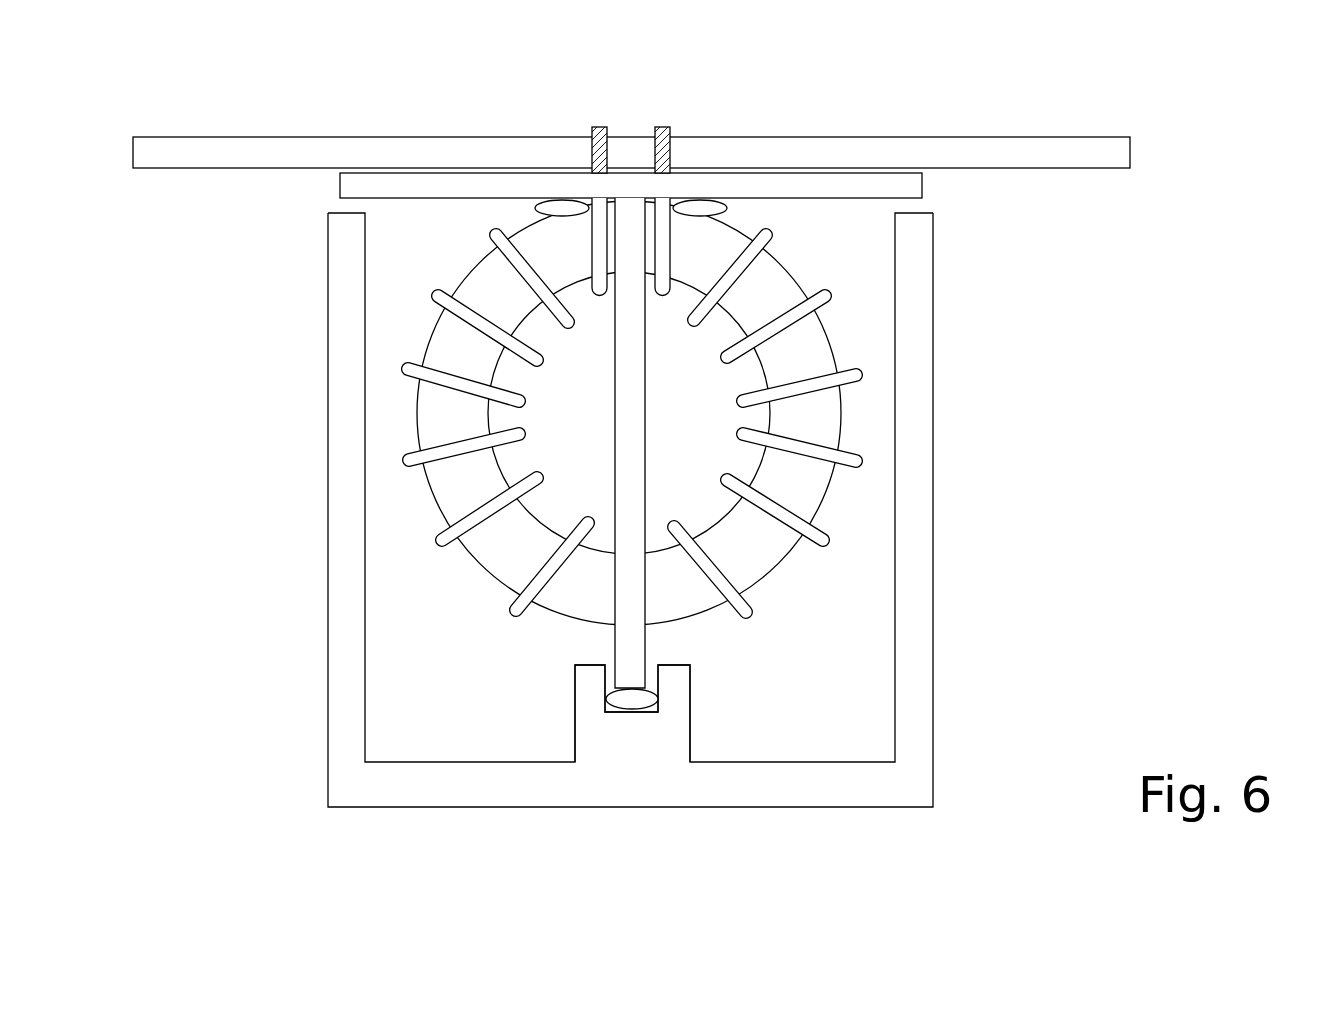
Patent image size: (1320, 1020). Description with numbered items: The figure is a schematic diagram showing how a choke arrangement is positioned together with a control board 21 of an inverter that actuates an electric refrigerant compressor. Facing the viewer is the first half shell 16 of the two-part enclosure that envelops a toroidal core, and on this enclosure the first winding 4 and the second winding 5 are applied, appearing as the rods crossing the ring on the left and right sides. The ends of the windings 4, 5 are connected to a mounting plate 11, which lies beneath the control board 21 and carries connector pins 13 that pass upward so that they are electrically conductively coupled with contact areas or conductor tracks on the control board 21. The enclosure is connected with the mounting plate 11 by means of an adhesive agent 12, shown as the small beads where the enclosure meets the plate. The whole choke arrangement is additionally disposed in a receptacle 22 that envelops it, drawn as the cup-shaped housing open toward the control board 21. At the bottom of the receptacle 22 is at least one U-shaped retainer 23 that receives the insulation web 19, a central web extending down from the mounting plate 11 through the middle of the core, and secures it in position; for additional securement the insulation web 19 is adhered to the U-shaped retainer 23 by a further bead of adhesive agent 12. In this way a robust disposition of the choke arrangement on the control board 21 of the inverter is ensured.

The first winding 4 is at (405, 368).
The second winding 5 is at (862, 372).
The mounting plate 11 is at (922, 180).
The adhesive agent 12 is at (563, 208).
The connector pins 13 is at (665, 127).
The first half shell 16 is at (813, 495).
The insulation web 19 is at (635, 663).
The control board 21 is at (887, 150).
The receptacle 22 is at (448, 783).
The U-shaped retainer 23 is at (673, 688).